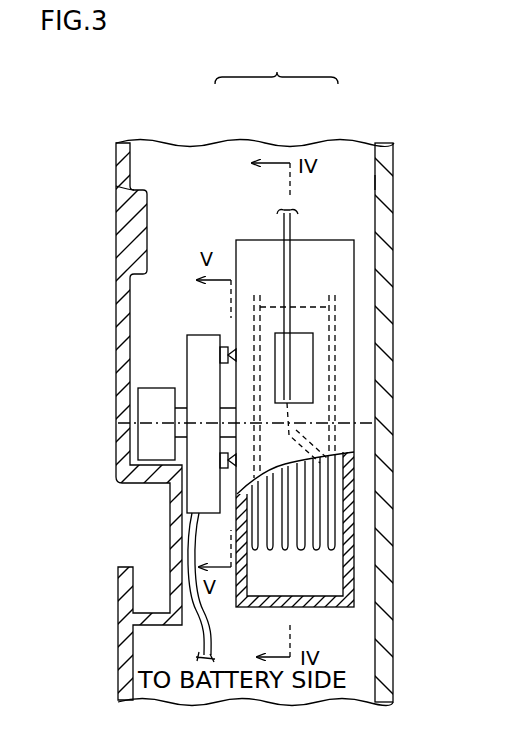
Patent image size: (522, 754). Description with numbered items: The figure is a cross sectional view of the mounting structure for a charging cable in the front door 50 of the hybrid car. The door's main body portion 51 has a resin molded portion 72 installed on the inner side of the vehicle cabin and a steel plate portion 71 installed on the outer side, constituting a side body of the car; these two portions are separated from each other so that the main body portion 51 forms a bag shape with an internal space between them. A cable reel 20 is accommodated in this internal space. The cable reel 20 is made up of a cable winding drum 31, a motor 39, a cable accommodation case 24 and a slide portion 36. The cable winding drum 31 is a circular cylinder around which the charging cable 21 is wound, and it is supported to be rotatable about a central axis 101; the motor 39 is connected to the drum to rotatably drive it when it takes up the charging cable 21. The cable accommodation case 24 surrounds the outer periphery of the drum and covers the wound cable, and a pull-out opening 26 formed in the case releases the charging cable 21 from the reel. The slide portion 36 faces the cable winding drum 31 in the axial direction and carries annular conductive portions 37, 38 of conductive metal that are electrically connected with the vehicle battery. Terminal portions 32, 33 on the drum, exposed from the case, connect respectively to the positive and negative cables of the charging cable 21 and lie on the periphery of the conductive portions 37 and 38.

The cable reel 20 is at (356, 290).
The charging cable 21 is at (292, 230).
The cable accommodation case 24 is at (340, 323).
The pull-out opening 26 is at (284, 405).
The cable winding drum 31 is at (343, 496).
The terminal portion 32 is at (232, 350).
The terminal portion 33 is at (227, 470).
The slide portion 36 is at (201, 463).
The conductive portion 37 is at (226, 358).
The conductive portion 38 is at (226, 458).
The motor 39 is at (158, 407).
The front door 50 is at (397, 185).
The main body portion 51 is at (276, 67).
The steel plate portion 71 is at (377, 182).
The resin molded portion 72 is at (143, 217).
The central axis 101 is at (349, 428).